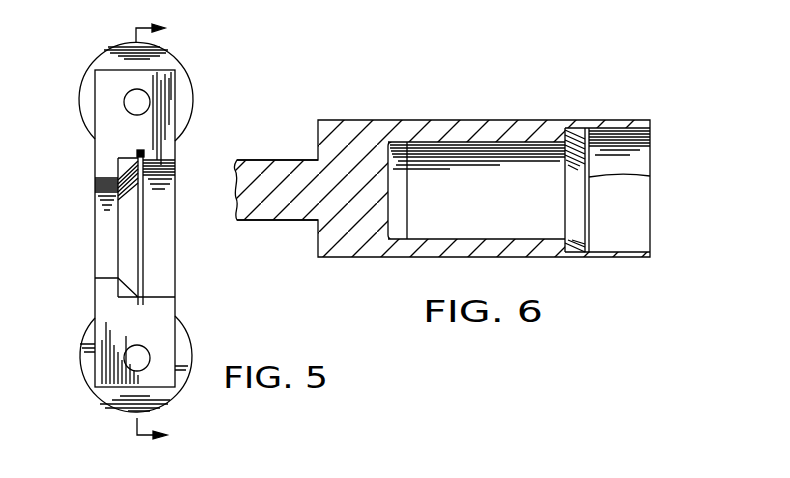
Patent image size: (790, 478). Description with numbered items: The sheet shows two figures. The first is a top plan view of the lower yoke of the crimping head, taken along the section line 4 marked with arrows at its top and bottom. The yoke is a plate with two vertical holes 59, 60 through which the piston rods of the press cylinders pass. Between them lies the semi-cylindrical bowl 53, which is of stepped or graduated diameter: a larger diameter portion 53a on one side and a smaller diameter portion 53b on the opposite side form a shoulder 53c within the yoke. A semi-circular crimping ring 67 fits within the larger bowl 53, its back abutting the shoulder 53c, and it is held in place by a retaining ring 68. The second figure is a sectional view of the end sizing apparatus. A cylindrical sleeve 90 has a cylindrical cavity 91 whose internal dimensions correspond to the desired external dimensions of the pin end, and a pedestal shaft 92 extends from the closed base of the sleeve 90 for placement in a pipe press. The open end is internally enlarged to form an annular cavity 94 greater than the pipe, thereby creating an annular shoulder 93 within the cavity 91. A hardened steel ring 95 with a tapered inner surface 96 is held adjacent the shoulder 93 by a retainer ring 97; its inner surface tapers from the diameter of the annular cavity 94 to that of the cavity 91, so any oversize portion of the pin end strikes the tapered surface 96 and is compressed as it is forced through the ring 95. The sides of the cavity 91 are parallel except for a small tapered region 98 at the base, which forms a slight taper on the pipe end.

In FIG. 5, the section line 4- 4 is at (159, 233).
In FIG. 5, the semi-cylindrical bowl 53 is at (165, 202).
In FIG. 5, the larger diameter portion 53a is at (168, 262).
In FIG. 5, the smaller diameter portion 53b is at (100, 193).
In FIG. 5, the shoulder 53c is at (118, 288).
In FIG. 5, the vertical hole 59 is at (125, 353).
In FIG. 5, the vertical hole 60 is at (157, 103).
In FIG. 5, the crimping ring 67 is at (125, 158).
In FIG. 5, the retaining ring 68 is at (141, 155).
In FIG. 6, the cylindrical sleeve 90 is at (443, 120).
In FIG. 6, the cylindrical cavity 91 is at (487, 152).
In FIG. 6, the pedestal shaft 92 is at (280, 222).
In FIG. 6, the annular shoulder 93 is at (563, 135).
In FIG. 6, the annular cavity 94 is at (625, 132).
In FIG. 6, the hardened steel ring 95 is at (568, 250).
In FIG. 6, the tapered inner surface 96 is at (568, 243).
In FIG. 6, the retainer ring 97 is at (592, 176).
In FIG. 6, the tapered region 98 is at (397, 142).